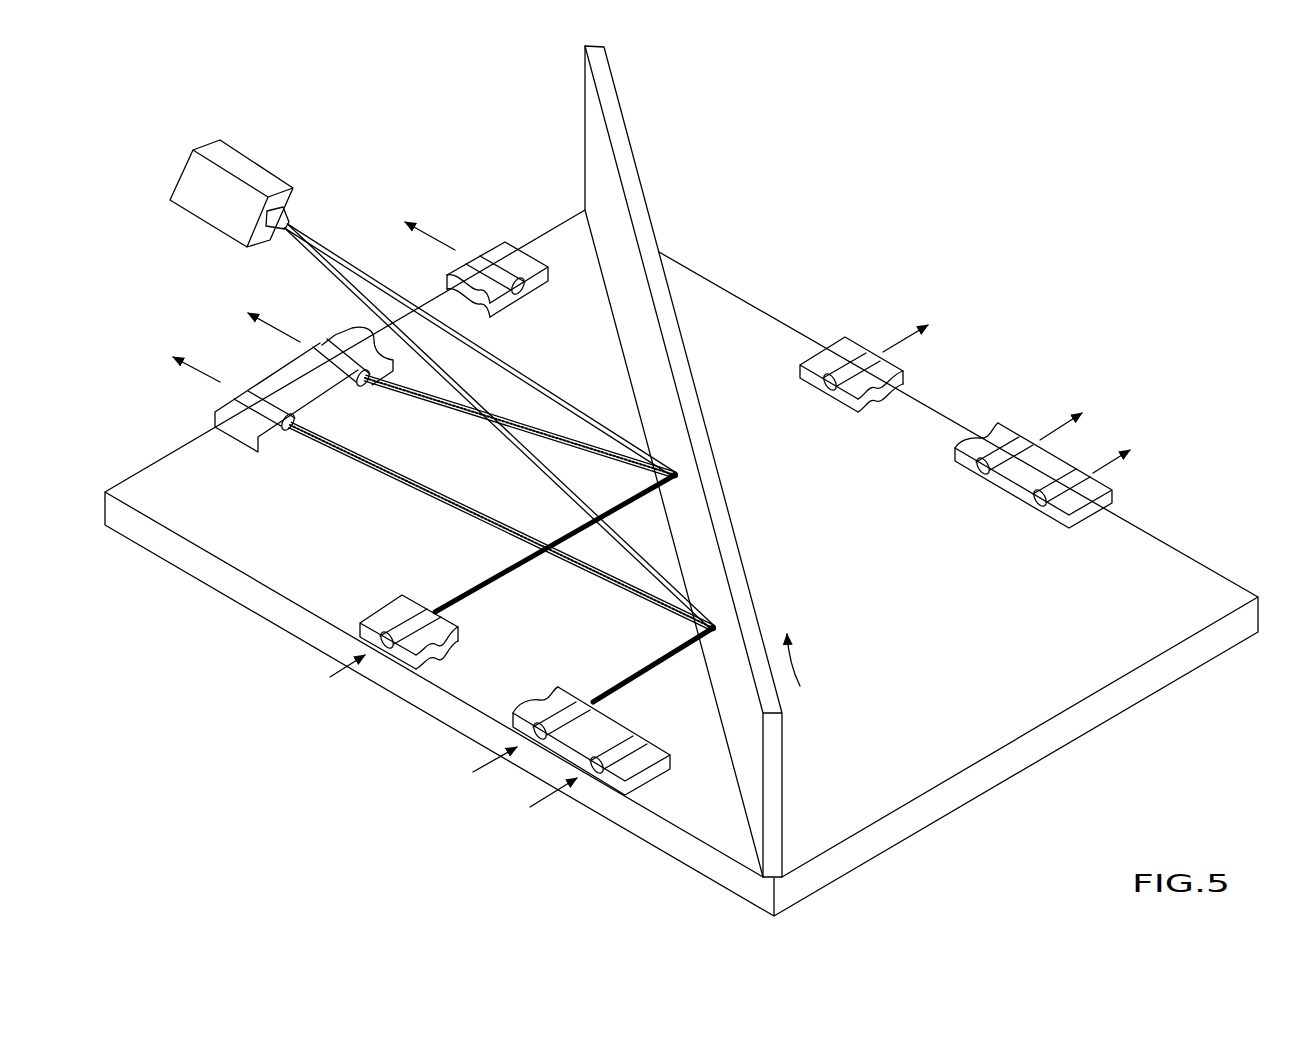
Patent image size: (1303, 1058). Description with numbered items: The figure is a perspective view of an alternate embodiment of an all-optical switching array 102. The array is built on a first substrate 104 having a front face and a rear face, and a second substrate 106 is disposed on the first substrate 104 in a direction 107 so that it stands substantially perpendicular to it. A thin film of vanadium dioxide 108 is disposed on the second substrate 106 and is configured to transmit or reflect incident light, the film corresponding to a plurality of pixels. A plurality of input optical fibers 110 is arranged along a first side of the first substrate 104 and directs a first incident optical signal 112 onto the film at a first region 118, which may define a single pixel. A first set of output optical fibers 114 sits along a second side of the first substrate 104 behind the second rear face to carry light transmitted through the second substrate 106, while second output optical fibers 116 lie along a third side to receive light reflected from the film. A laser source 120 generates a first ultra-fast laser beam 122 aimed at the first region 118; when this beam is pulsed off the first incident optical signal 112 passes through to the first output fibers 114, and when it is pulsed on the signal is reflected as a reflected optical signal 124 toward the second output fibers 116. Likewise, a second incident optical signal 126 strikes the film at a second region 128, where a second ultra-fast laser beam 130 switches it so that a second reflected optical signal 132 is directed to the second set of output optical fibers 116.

The all-optical switching array 102 is at (1150, 138).
The first substrate 104 is at (177, 552).
The second substrate 106 is at (618, 137).
The direction 107 is at (823, 648).
The thin film of vanadium dioxide 108 is at (595, 176).
The input optical fibers 110 is at (379, 650).
The first incident optical signal 112 is at (482, 592).
The first set of output optical fibers 114 is at (870, 352).
The second output optical fibers 116 is at (253, 400).
The first region 118 is at (678, 473).
The laser source 120 is at (247, 162).
The first ultra-fast laser beam 122 is at (540, 383).
The reflected optical signal 124 is at (427, 400).
The second incident optical signal 126 is at (650, 670).
The second region 128 is at (716, 626).
The second ultra-fast laser beam 130 is at (517, 450).
The second reflected optical signal 132 is at (398, 481).